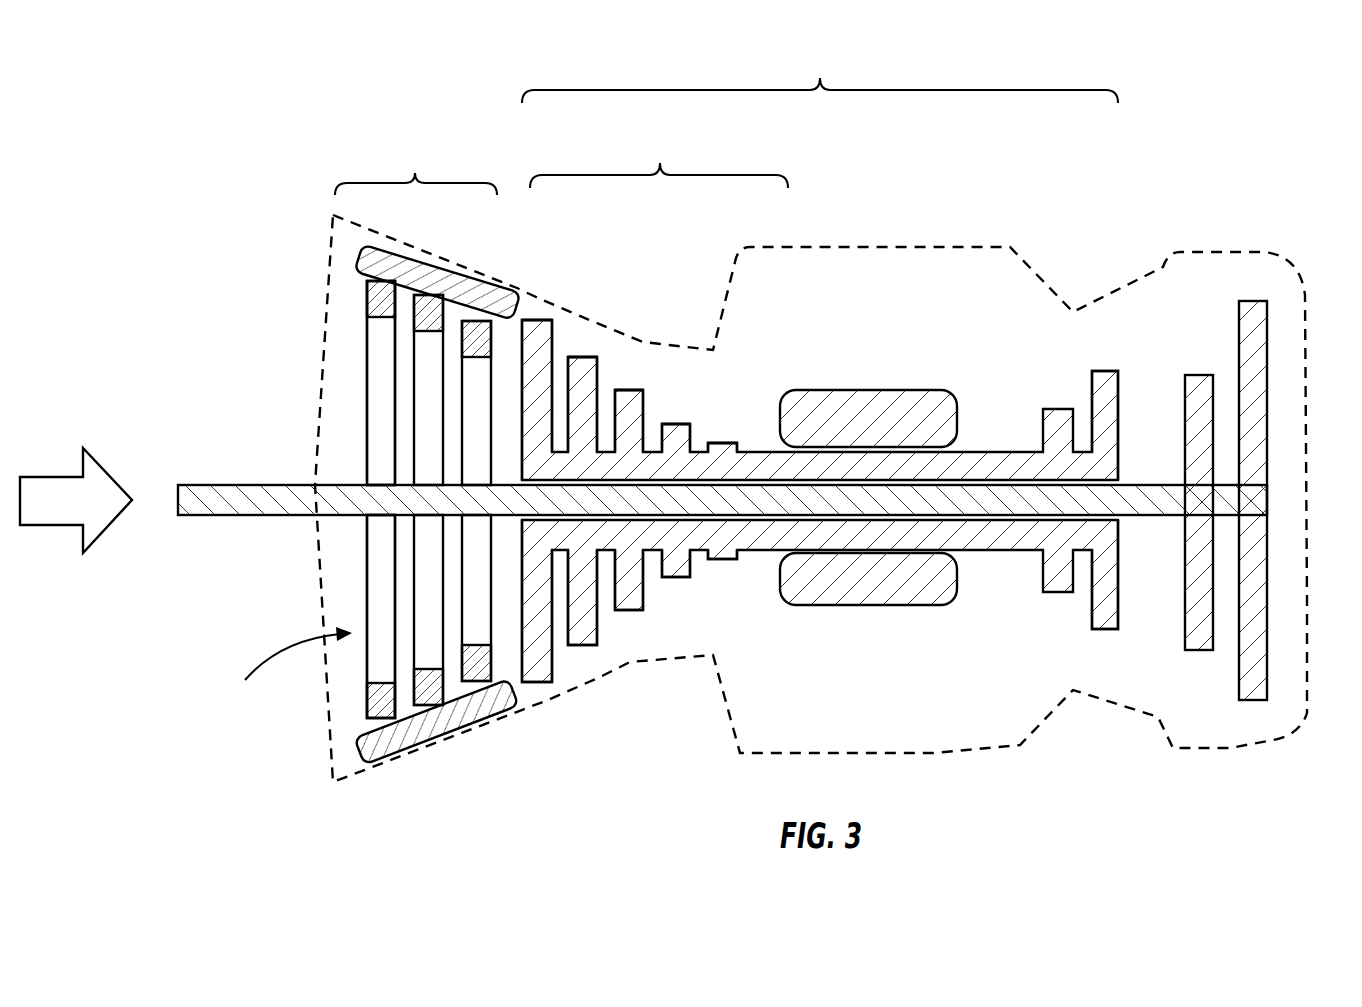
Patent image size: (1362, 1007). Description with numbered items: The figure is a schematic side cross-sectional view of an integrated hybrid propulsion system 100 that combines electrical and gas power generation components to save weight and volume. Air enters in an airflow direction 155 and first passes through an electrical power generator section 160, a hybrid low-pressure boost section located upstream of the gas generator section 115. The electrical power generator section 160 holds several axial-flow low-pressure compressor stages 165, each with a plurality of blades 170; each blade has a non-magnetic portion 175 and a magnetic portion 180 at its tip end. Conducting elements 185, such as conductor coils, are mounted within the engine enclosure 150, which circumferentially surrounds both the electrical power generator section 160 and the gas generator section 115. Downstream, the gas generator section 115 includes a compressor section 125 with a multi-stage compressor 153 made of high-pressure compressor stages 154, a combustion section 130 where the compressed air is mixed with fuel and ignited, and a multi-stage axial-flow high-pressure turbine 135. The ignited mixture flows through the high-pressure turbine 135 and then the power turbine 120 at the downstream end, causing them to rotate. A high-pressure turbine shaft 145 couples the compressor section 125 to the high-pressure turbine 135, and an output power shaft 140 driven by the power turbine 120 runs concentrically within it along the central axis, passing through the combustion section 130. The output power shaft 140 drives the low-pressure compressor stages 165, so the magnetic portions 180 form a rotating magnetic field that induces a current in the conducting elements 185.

The integrated hybrid propulsion system 100 is at (132, 168).
The gas generator section 115 is at (820, 72).
The power turbine 120 is at (1254, 286).
The compressor section 125 is at (659, 155).
The combustion section 130 is at (879, 624).
The high-pressure turbine 135 is at (1095, 341).
The output power shaft 140 is at (270, 515).
The high-pressure turbine shaft 145 is at (762, 535).
The engine enclosure 150 is at (1223, 748).
The multi-stage compressor 153 is at (625, 652).
The compressor stages 154 is at (722, 443).
The airflow direction 155 is at (70, 477).
The electrical power generator section 160 is at (416, 160).
The low-pressure compressor stages 165 is at (475, 598).
The blades 170 is at (277, 663).
The non-magnetic portion 175 is at (375, 405).
The magnetic portion 180 is at (372, 298).
The conducting elements 185 is at (457, 730).